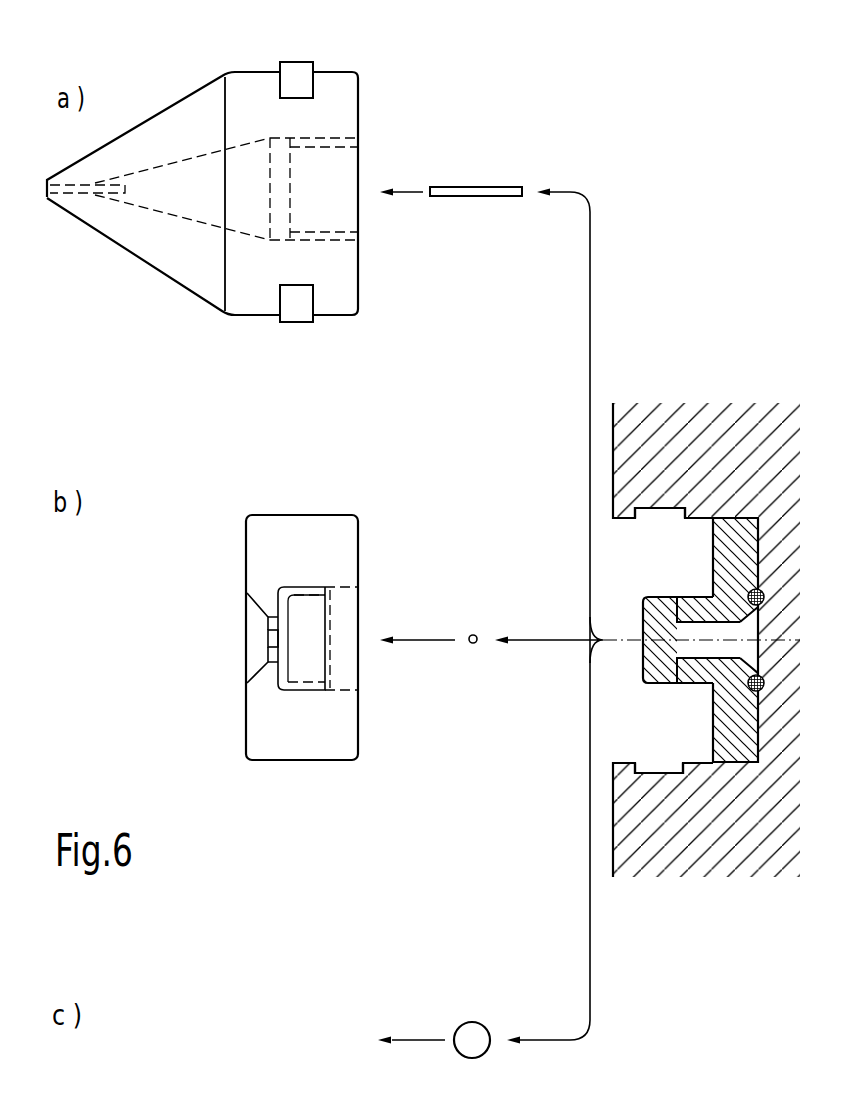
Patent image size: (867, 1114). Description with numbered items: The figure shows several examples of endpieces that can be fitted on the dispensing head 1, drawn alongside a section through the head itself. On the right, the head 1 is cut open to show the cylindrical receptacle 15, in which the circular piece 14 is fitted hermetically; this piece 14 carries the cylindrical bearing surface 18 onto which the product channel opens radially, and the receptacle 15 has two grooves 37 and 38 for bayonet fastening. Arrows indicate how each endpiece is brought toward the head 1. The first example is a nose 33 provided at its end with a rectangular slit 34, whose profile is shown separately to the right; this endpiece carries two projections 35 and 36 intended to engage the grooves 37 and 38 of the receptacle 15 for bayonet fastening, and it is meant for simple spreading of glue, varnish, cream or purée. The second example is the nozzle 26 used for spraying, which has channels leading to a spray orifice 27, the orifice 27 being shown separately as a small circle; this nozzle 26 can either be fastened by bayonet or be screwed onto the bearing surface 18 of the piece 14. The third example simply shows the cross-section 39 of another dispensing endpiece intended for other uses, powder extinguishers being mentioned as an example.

The head 1 is at (658, 440).
The circular piece 14 is at (733, 537).
The cylindrical receptacle 15 is at (710, 669).
The cylindrical bearing surface 18 is at (660, 597).
The nozzle 26 is at (263, 733).
The spray orifice 27 is at (267, 640).
The nose 33 is at (190, 110).
The rectangular slit 34 is at (45, 195).
The projection 35 is at (300, 72).
The projection 36 is at (287, 310).
The groove 37 is at (660, 512).
The groove 38 is at (658, 772).
The cross-section 39 is at (472, 1022).